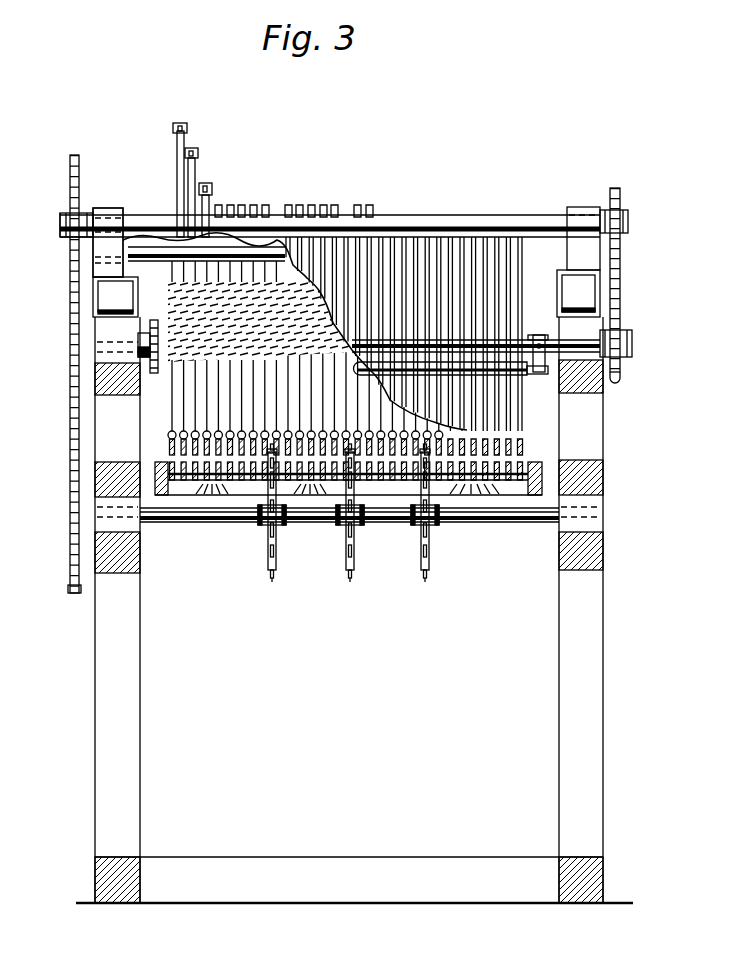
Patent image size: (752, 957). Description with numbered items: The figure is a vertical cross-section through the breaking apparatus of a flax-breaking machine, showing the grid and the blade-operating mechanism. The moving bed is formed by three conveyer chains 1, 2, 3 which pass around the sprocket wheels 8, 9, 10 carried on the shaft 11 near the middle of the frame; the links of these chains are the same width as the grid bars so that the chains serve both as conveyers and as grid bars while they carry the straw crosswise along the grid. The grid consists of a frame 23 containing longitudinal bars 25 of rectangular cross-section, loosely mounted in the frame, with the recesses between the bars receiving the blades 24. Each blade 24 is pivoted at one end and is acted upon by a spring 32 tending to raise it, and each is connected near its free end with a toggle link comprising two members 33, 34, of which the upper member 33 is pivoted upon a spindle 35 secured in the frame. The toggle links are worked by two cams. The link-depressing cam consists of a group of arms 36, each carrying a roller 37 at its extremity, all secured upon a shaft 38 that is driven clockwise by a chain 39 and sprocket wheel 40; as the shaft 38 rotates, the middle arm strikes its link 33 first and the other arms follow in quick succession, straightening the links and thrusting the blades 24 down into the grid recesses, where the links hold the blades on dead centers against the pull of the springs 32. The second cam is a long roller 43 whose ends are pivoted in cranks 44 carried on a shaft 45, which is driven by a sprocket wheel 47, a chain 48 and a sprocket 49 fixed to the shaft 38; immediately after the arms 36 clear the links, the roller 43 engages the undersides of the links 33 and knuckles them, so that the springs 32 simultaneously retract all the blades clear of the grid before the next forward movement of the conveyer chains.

The conveyer chain 1 is at (272, 582).
The conveyer chain 2 is at (350, 582).
The conveyer chain 3 is at (425, 582).
The sprocket wheel 8 is at (280, 550).
The sprocket wheel 9 is at (345, 553).
The sprocket wheel 10 is at (421, 553).
The shaft 11 is at (514, 519).
The grid frame 23 is at (348, 479).
The blades 24 is at (172, 439).
The longitudinal bars 25 is at (347, 496).
The spring 32 is at (260, 320).
The upper toggle link member 33 is at (412, 334).
The lower toggle link member 34 is at (356, 346).
The spindle 35 is at (525, 222).
The arm 36 is at (206, 178).
The roller 37 is at (186, 127).
The shaft 38 is at (133, 220).
The chain 39 is at (63, 374).
The sprocket wheel 40 is at (66, 212).
The roller 43 is at (528, 373).
The cranks 44 is at (543, 348).
The shaft 45 is at (517, 343).
The sprocket wheel 47 is at (627, 378).
The chain 48 is at (623, 286).
The sprocket 49 is at (622, 243).